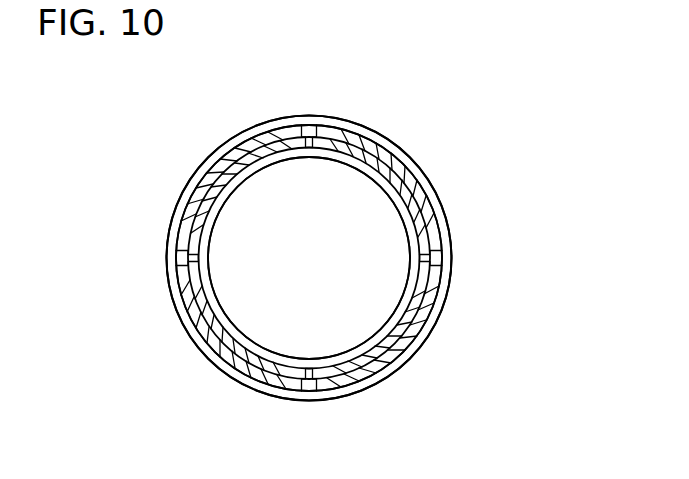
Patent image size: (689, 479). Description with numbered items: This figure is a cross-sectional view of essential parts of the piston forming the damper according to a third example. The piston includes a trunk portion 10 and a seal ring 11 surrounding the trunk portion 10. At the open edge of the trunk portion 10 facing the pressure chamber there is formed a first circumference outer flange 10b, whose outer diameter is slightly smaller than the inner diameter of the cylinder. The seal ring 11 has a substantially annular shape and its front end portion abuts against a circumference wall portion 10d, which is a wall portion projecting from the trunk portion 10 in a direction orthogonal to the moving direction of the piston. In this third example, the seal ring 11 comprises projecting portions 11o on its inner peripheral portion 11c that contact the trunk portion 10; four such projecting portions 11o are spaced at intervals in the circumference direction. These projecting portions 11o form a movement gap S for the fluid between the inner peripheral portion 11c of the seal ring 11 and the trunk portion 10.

The trunk portion 10 is at (437, 290).
The first circumference outer flange 10b is at (432, 181).
The circumference wall portion 10d is at (437, 222).
The seal ring 11 is at (281, 132).
The inner peripheral portion 11c is at (388, 376).
The projecting portion 11o is at (308, 143).
The movement gap S is at (225, 170).